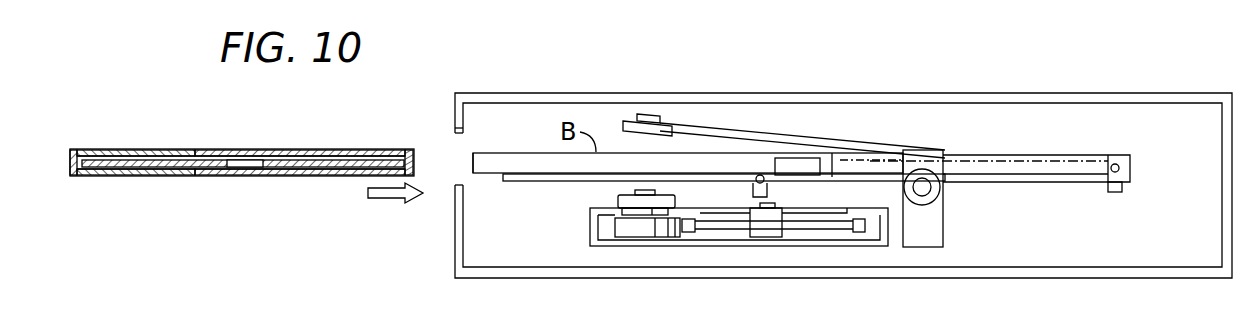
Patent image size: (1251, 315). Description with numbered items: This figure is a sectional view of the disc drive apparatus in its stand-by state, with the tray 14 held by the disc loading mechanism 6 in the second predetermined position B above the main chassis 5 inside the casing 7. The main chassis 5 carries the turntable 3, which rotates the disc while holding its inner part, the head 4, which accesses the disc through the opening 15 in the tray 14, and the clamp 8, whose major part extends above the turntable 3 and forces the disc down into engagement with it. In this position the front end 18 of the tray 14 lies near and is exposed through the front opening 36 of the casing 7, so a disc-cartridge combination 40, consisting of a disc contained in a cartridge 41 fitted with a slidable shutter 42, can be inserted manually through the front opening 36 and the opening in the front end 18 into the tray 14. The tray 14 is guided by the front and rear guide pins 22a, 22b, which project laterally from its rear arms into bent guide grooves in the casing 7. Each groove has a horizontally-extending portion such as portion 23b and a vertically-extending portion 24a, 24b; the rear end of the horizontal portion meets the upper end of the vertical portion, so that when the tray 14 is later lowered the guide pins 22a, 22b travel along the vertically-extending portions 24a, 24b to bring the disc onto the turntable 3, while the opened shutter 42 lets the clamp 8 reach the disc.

The turntable 3 is at (617, 200).
The head 4 is at (767, 238).
The main chassis 5 is at (874, 247).
The disc loading mechanism 6 is at (505, 142).
The casing 7 is at (541, 93).
The clamp 8 is at (740, 128).
The tray 14 is at (494, 181).
The opening 15 is at (670, 151).
The front end 18 is at (470, 163).
The front guide pin 22a is at (784, 117).
The rear guide pin 22b is at (1117, 164).
The horizontally-extending portion 23b is at (985, 176).
The vertically-extending portion 24a is at (752, 186).
The vertically-extending portion 24b is at (1125, 186).
The front opening 36 is at (458, 140).
The disc-cartridge combination 40 is at (242, 133).
The cartridge 41 is at (128, 150).
The shutter 42 is at (268, 150).